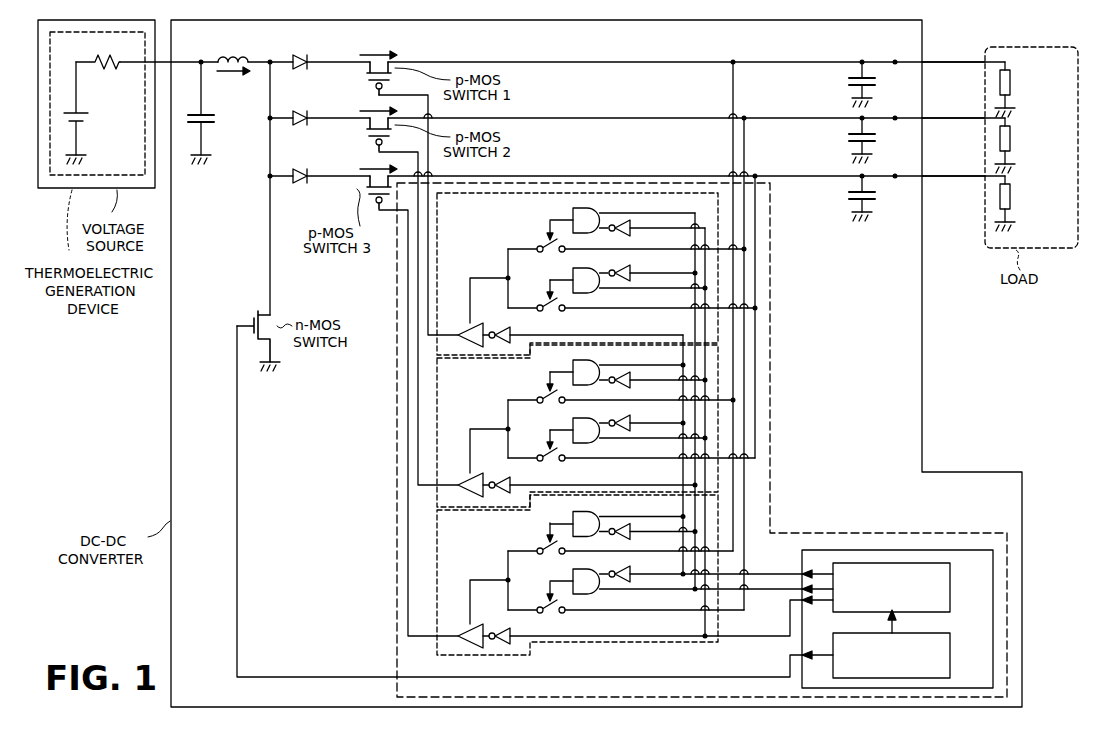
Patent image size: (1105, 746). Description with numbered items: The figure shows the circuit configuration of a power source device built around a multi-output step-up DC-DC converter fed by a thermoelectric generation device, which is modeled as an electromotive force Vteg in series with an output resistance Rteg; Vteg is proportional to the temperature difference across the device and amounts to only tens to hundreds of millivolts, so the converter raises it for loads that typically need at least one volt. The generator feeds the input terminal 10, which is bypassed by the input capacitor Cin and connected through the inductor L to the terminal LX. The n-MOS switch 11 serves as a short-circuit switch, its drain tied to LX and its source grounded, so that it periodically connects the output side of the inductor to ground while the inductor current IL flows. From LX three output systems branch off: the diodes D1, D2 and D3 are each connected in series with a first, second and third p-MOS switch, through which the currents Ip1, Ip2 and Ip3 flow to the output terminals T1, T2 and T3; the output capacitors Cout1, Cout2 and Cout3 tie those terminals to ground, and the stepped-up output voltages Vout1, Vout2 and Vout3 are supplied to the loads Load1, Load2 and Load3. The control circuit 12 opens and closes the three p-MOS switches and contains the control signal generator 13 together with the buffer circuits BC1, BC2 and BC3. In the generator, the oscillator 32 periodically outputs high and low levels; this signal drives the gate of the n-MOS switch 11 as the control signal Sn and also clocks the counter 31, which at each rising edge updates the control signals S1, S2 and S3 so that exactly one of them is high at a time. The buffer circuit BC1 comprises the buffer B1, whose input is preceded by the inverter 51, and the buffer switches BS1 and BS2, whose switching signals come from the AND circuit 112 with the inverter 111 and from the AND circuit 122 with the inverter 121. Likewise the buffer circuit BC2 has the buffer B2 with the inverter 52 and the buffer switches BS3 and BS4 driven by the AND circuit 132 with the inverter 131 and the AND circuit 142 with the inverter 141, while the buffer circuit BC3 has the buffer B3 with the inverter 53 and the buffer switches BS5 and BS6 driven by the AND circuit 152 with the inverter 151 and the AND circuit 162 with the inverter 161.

The input terminal 10 is at (180, 61).
The n-MOS switch 11 is at (250, 320).
The control circuit 12 is at (396, 582).
The control signal generator 13 is at (895, 549).
The counter 31 is at (951, 588).
The oscillator 32 is at (951, 658).
The inverter 51 is at (492, 328).
The inverter 52 is at (492, 478).
The inverter 53 is at (492, 629).
The inverter 111 is at (629, 232).
The AND circuit 112 is at (602, 214).
The inverter 121 is at (629, 270).
The AND circuit 122 is at (602, 286).
The inverter 131 is at (629, 383).
The AND circuit 132 is at (602, 366).
The inverter 141 is at (629, 420).
The AND circuit 142 is at (602, 438).
The inverter 151 is at (629, 535).
The AND circuit 152 is at (602, 518).
The inverter 161 is at (629, 571).
The AND circuit 162 is at (602, 589).
The output resistance Rteg is at (98, 74).
The electromotive force Vteg is at (95, 113).
The input capacitor Cin is at (213, 113).
The inductor L is at (233, 48).
The inductor current IL is at (235, 74).
The terminal LX is at (270, 60).
The diode D1 is at (302, 58).
The diode D2 is at (302, 114).
The diode D3 is at (302, 172).
The current of p-MOS switch 1 Ip1 is at (374, 54).
The current of p-MOS switch 2 Ip2 is at (374, 110).
The current of p-MOS switch 3 Ip3 is at (374, 168).
The output capacitor Cout1 is at (832, 84).
The output capacitor Cout2 is at (832, 140).
The output capacitor Cout3 is at (832, 198).
The output terminal T1 is at (895, 60).
The output terminal T2 is at (895, 116).
The output terminal T3 is at (895, 174).
The output voltage Vout1 is at (941, 60).
The output voltage Vout2 is at (941, 116).
The output voltage Vout3 is at (941, 174).
The load Load1 is at (1012, 87).
The load Load2 is at (1012, 144).
The load Load3 is at (1012, 202).
The control signal Sn is at (666, 675).
The control signal S1 is at (763, 573).
The control signal S2 is at (766, 591).
The control signal S3 is at (768, 638).
The buffer circuit BC1 is at (742, 272).
The buffer circuit BC2 is at (740, 375).
The buffer circuit BC3 is at (745, 508).
The buffer B1 is at (461, 325).
The buffer B2 is at (461, 475).
The buffer B3 is at (461, 626).
The buffer switch BS1 is at (627, 248).
The buffer switch BS2 is at (633, 306).
The buffer switch BS3 is at (622, 399).
The buffer switch BS4 is at (631, 457).
The buffer switch BS5 is at (620, 550).
The buffer switch BS6 is at (626, 609).